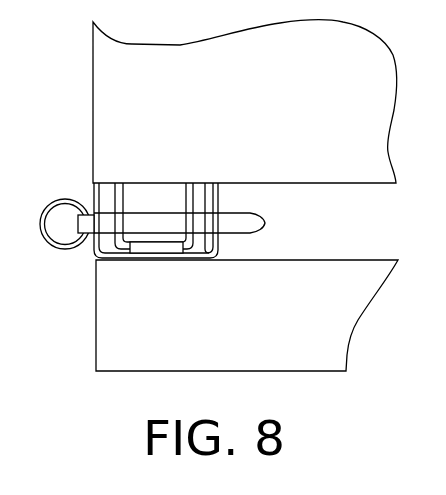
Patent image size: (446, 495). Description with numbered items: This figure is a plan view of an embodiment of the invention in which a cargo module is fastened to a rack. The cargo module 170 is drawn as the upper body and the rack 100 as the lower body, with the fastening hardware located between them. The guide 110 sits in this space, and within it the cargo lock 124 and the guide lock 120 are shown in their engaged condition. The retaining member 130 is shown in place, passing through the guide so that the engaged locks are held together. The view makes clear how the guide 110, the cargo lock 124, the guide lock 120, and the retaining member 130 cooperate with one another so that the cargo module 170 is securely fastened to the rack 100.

The cargo module 170 is at (252, 126).
The rack 100 is at (95, 331).
The guide 110 is at (93, 191).
The cargo lock 124 is at (121, 204).
The guide lock 120 is at (158, 244).
The retaining member 130 is at (232, 222).